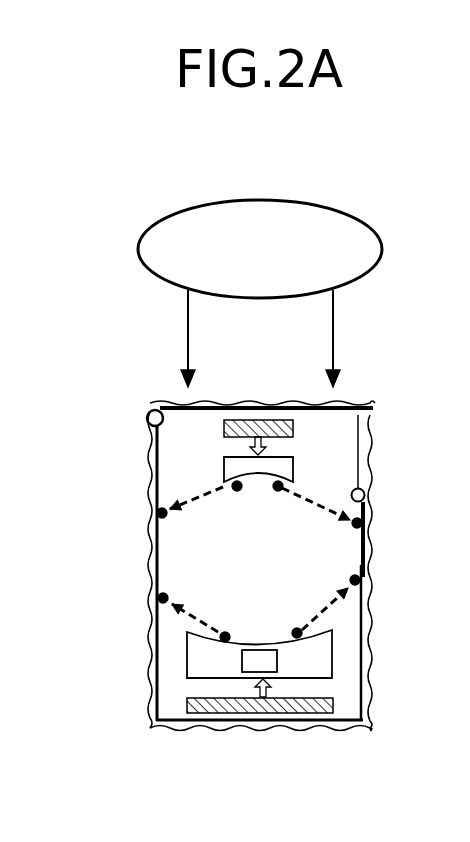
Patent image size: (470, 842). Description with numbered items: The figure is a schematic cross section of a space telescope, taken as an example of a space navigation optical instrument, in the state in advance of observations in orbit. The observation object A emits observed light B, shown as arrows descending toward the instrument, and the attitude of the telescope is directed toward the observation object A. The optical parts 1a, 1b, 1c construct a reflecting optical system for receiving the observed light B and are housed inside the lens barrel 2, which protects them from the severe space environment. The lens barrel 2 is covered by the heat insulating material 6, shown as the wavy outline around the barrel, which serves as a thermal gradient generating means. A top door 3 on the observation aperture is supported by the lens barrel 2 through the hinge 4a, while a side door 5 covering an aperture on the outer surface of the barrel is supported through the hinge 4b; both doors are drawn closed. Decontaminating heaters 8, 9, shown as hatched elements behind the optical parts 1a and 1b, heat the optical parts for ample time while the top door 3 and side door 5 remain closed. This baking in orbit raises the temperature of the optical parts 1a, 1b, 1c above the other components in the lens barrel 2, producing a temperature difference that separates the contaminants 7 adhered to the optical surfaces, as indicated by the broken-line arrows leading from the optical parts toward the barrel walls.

The observation object A is at (258, 200).
The observed light B is at (335, 327).
The lens barrel 2 is at (155, 536).
The top door 3 is at (248, 398).
The heat insulating material 6 is at (150, 462).
The hinge 4a is at (147, 411).
The hinge 4b is at (364, 495).
The side door 5 is at (367, 552).
The decontaminating heater 9 is at (277, 420).
The optical part 1b is at (293, 460).
The contaminants 7 is at (157, 601).
The optical part 1a is at (332, 655).
The optical part 1c is at (262, 653).
The decontaminating heater 8 is at (290, 714).